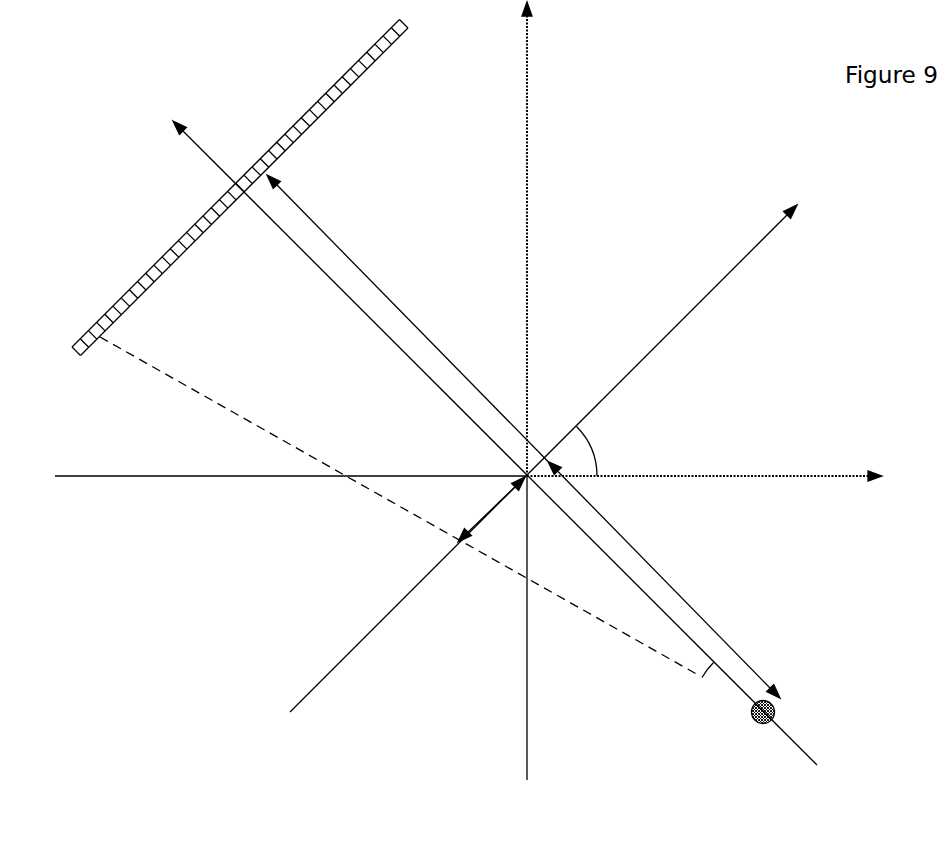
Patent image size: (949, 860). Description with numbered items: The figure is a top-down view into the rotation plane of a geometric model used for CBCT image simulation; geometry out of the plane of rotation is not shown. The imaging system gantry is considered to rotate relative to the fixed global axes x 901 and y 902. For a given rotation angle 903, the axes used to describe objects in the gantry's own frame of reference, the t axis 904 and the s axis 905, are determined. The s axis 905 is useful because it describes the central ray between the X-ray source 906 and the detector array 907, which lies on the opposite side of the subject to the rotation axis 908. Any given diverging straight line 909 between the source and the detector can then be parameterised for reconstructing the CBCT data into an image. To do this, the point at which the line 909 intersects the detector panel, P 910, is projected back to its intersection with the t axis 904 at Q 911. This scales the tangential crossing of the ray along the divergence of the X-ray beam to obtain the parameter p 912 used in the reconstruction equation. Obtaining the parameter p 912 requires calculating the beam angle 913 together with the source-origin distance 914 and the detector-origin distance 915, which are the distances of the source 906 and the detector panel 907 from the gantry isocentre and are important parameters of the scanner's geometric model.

The x axis 901 is at (790, 473).
The y axis 902 is at (530, 67).
The rotation angle β 903 is at (573, 445).
The t axis 904 is at (738, 267).
The s axis 905 is at (298, 247).
The X-ray source 906 is at (755, 722).
The detector array 907 is at (178, 241).
The rotation axis 908 is at (540, 455).
The diverging straight line 909 is at (593, 613).
The point P 910 is at (100, 337).
The point Q 911 is at (458, 538).
The parameter p 912 is at (450, 478).
The beam angle α 913 is at (710, 680).
The source-origin distance DSO 914 is at (733, 556).
The detector-origin distance DDO 915 is at (447, 268).